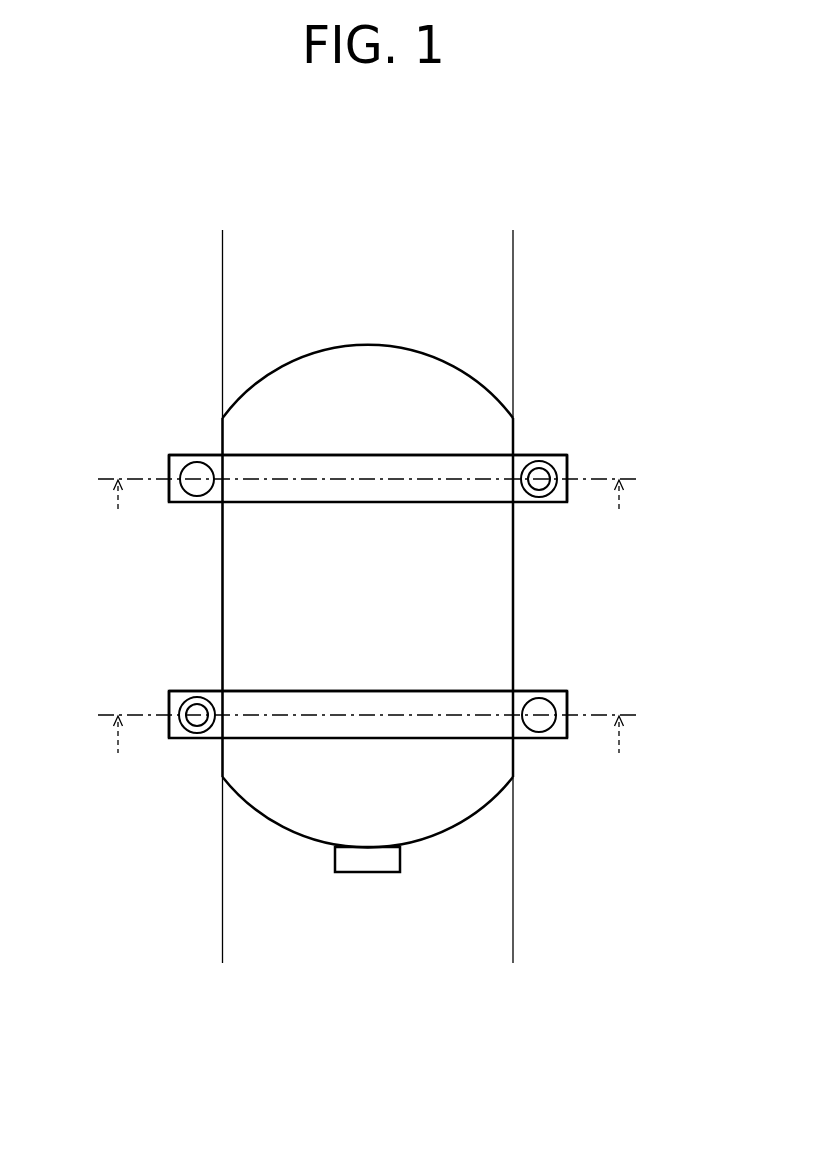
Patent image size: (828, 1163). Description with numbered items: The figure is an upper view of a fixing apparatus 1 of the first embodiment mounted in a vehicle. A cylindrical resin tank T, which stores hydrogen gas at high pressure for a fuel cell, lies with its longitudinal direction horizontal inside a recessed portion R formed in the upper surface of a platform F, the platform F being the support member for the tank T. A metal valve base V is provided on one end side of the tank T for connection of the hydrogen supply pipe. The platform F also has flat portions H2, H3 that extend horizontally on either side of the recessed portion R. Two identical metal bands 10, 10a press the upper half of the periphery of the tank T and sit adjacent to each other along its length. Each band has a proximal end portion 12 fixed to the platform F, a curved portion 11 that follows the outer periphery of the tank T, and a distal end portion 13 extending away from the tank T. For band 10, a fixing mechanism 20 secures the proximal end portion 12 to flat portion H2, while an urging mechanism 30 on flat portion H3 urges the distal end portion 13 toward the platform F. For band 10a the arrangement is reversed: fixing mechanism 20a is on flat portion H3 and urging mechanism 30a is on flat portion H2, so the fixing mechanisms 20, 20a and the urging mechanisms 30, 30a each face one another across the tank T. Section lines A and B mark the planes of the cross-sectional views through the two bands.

The fixing apparatus 1 is at (376, 586).
The band 10 is at (478, 453).
The band 10a is at (490, 690).
The curved portion 11 is at (273, 458).
The proximal end portion 12 is at (200, 500).
The distal end portion 13 is at (518, 492).
The fixing mechanism 20 is at (169, 455).
The fixing mechanism 20a is at (568, 690).
The urging mechanism 30 is at (553, 453).
The urging mechanism 30a is at (195, 748).
The tank T is at (423, 380).
The valve base V is at (400, 858).
The recessed portion R is at (329, 562).
The platform F is at (203, 332).
The cross-section line A- A is at (369, 514).
The cross-section line B- B is at (369, 750).
The flat portion H2 is at (185, 617).
The flat portion H3 is at (540, 787).